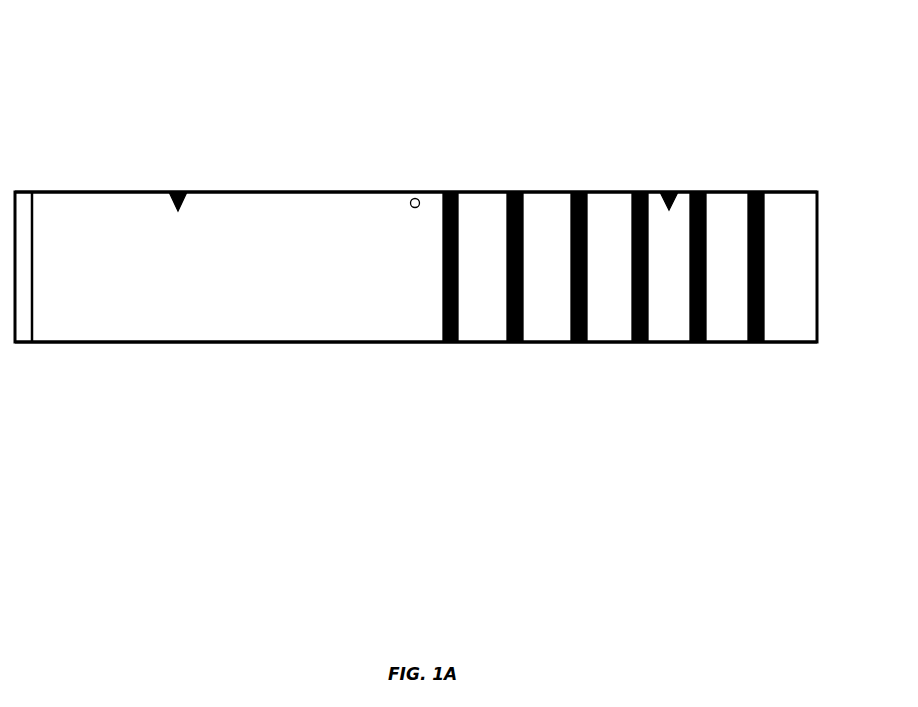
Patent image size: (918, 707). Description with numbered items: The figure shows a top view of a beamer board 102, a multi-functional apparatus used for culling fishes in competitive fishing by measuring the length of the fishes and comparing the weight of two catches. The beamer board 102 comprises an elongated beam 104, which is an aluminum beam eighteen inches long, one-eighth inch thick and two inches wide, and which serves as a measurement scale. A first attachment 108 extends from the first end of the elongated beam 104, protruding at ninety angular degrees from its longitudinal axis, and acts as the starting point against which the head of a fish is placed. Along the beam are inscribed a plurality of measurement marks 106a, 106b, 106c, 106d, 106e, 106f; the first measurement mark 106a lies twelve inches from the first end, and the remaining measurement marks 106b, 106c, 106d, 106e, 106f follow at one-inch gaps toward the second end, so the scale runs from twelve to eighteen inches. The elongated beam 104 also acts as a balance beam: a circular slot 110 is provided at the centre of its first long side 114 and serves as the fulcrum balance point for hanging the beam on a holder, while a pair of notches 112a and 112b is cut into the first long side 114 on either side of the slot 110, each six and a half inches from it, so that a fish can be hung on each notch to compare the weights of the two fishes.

The beamer board 102 is at (99, 101).
The elongated beam 104 is at (208, 343).
The first measurement mark 106a is at (450, 343).
The measurement mark 106b is at (514, 191).
The measurement mark 106c is at (580, 343).
The measurement mark 106d is at (638, 191).
The measurement mark 106e is at (705, 343).
The measurement mark 106f is at (755, 191).
The first attachment 108 is at (29, 190).
The slot 110 is at (416, 198).
The notch 112a is at (178, 190).
The notch 112b is at (669, 190).
The first long side 114 is at (273, 191).